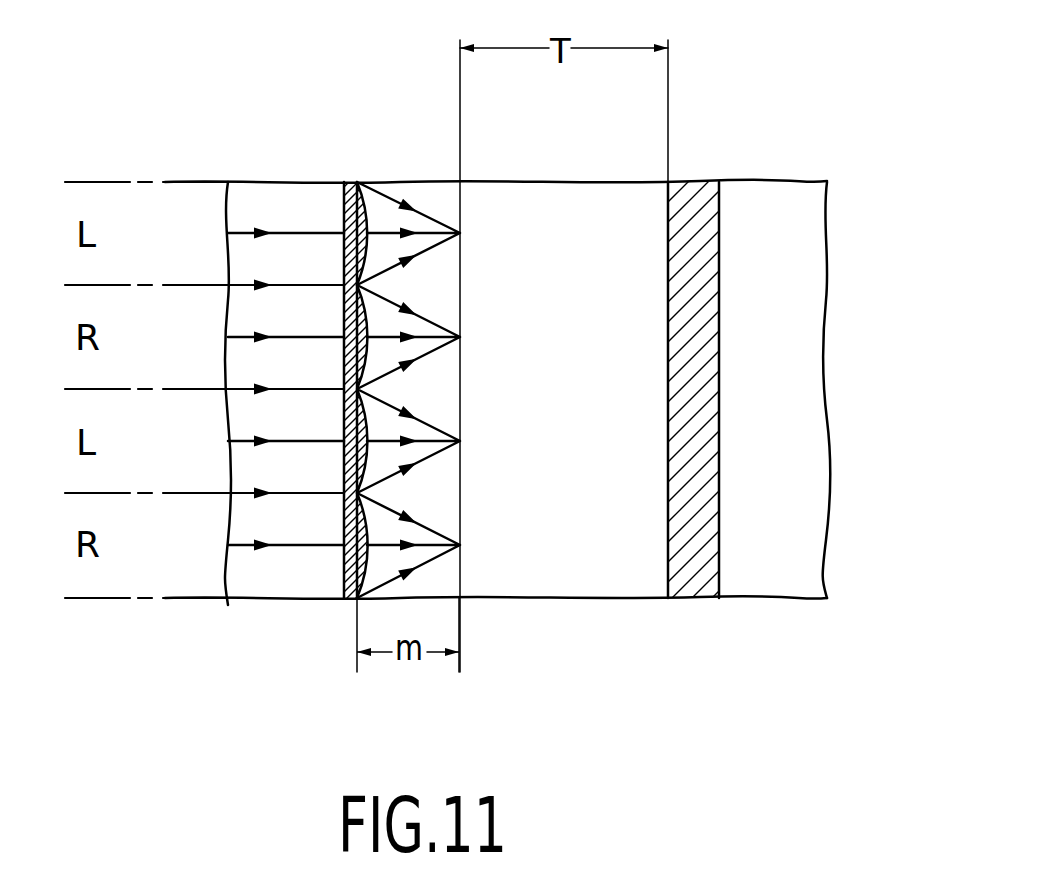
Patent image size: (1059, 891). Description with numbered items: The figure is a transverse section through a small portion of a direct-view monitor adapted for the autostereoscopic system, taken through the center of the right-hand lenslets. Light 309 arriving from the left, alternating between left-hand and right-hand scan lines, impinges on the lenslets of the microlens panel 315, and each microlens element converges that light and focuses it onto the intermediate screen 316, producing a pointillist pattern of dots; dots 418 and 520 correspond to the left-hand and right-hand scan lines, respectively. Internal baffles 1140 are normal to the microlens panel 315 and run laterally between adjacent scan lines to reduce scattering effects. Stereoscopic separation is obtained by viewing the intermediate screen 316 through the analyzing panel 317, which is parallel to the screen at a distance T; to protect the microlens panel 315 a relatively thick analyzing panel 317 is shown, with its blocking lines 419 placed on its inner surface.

The light 309 is at (287, 232).
The internal baffles 1140 is at (307, 497).
The microlens panel 315 is at (348, 563).
The intermediate screen 316 is at (468, 580).
The dots corresponding to left-hand scan lines 418 is at (460, 233).
The dots corresponding to right-hand scan lines 520 is at (460, 547).
The blocking lines 419 is at (670, 182).
The analyzing panel 317 is at (705, 425).